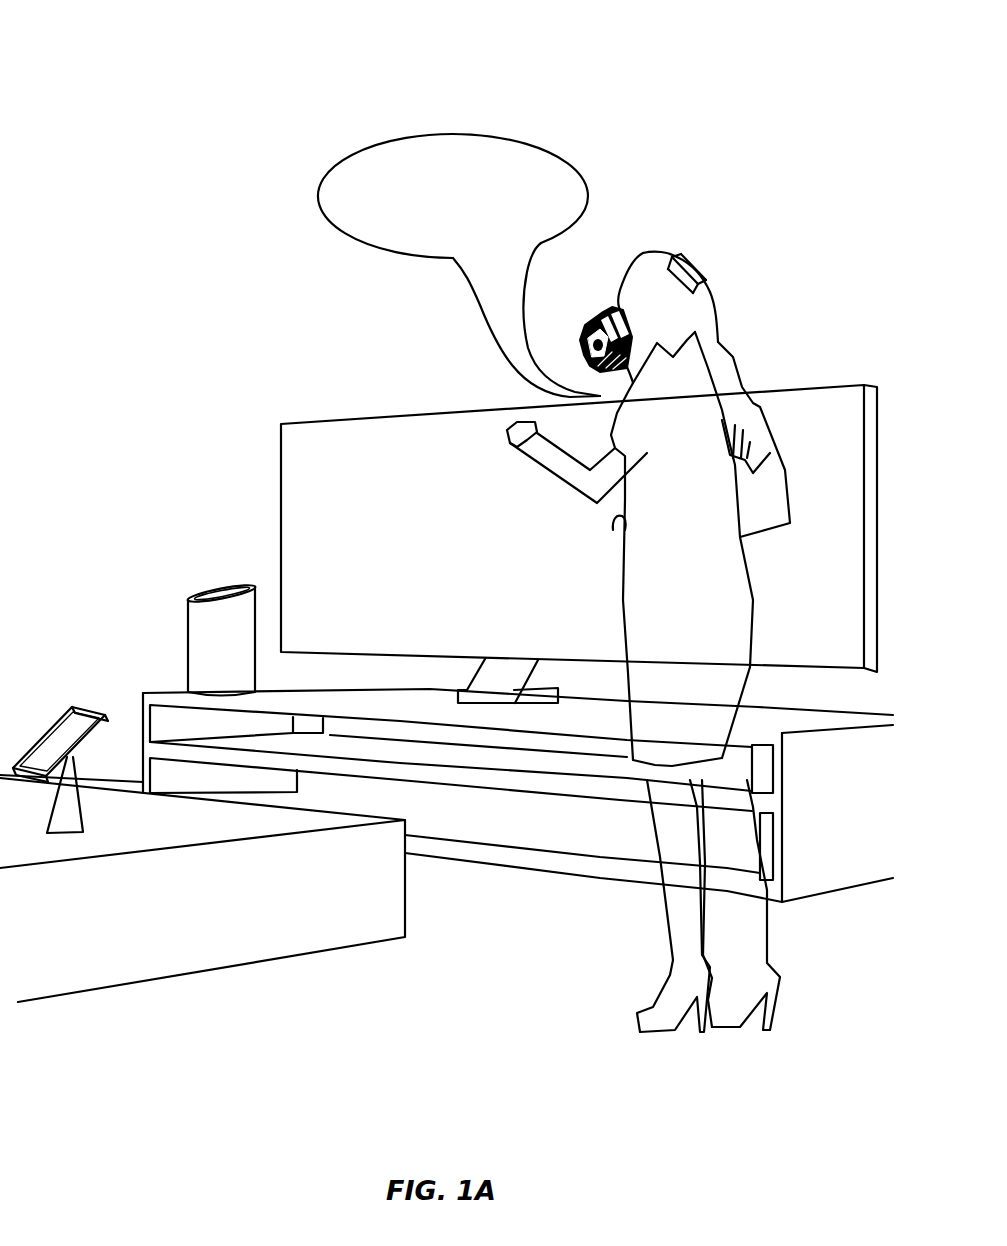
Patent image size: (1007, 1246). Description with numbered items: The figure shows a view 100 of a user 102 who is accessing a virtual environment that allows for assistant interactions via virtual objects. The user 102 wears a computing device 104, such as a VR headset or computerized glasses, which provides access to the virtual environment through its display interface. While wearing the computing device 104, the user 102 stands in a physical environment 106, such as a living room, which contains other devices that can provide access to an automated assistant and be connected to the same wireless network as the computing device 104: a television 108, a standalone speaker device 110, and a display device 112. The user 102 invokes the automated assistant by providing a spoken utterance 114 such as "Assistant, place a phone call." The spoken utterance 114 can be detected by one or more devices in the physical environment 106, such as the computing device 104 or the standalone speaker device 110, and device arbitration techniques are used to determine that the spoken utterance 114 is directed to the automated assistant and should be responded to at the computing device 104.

The view 100 is at (152, 90).
The user 102 is at (697, 483).
The computing device 104 is at (587, 324).
The physical environment 106 is at (497, 973).
The television 108 is at (360, 420).
The standalone speaker device 110 is at (210, 590).
The display device 112 is at (58, 718).
The spoken utterance 114 is at (527, 143).